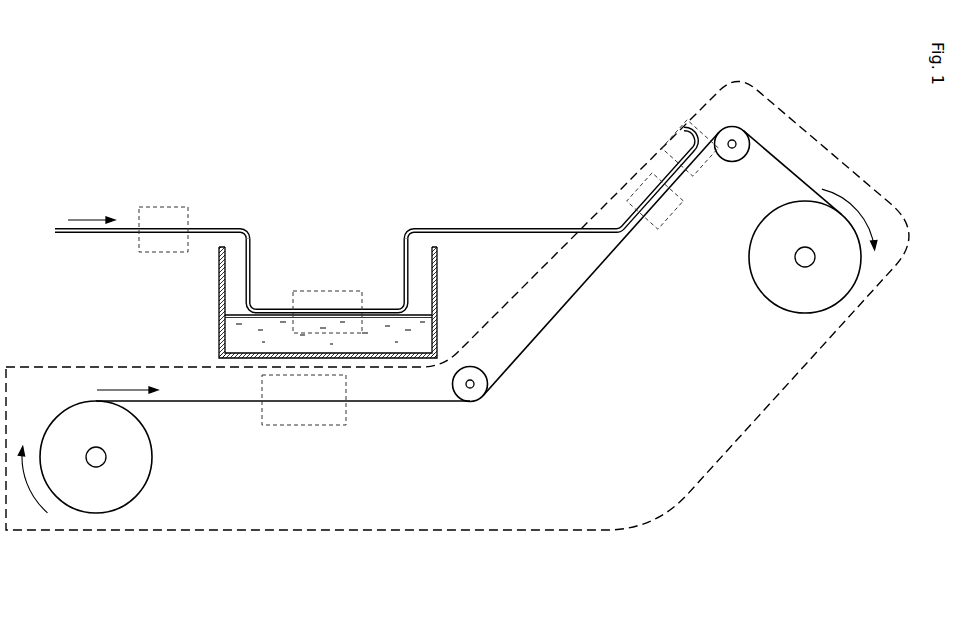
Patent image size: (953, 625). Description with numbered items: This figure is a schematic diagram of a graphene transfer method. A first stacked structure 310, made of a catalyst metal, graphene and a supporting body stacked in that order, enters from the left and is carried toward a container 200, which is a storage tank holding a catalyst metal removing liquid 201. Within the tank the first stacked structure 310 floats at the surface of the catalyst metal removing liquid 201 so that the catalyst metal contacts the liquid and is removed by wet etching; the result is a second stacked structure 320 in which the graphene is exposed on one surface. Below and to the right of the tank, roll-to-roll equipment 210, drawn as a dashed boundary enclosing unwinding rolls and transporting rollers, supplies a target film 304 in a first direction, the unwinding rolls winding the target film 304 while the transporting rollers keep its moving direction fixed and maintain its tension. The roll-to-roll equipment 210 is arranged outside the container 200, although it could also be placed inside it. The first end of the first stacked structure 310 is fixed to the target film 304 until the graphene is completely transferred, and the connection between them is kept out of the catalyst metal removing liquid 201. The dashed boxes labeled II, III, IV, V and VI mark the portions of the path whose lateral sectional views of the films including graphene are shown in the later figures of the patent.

The first stacked structure 310 is at (221, 225).
The second stacked structure 320 is at (360, 255).
The container 200 is at (437, 273).
The catalyst metal removing liquid 201 is at (420, 336).
The target film 304 is at (420, 404).
The roll-to-roll equipment 210 is at (700, 480).
The detail view II region II is at (702, 136).
The detail view III region III is at (166, 206).
The detail view IV region IV is at (329, 290).
The detail view V region V is at (302, 427).
The detail view VI region VI is at (639, 186).